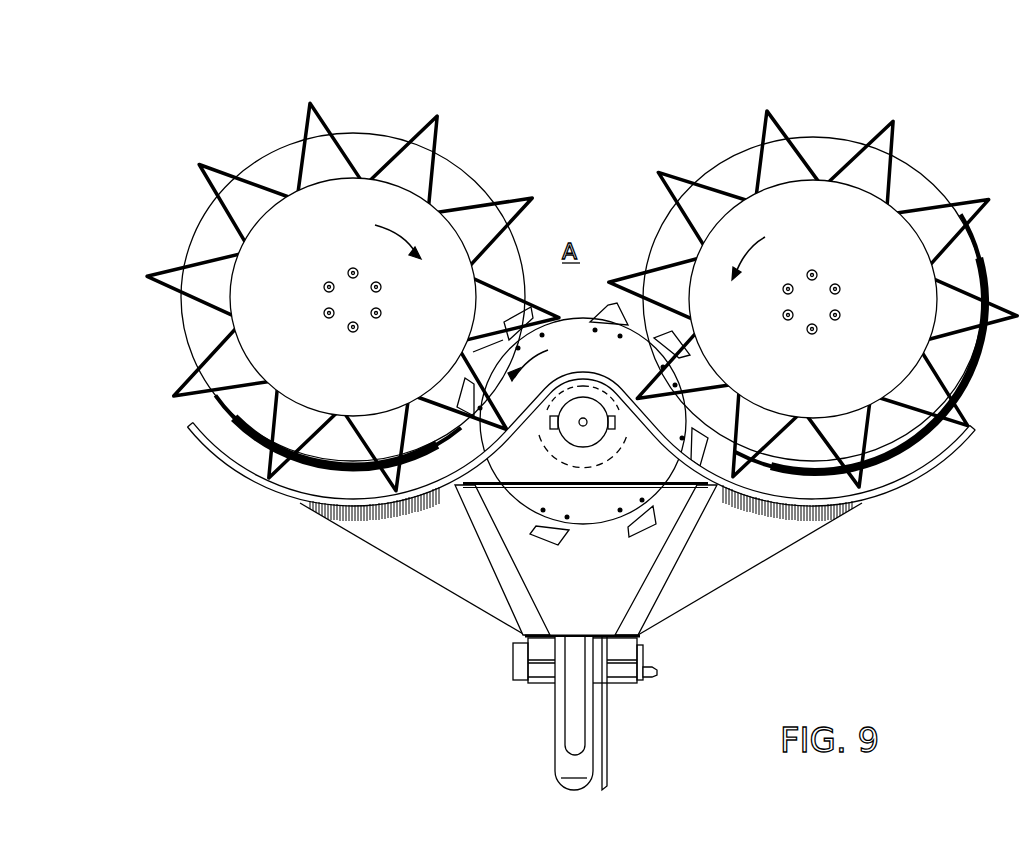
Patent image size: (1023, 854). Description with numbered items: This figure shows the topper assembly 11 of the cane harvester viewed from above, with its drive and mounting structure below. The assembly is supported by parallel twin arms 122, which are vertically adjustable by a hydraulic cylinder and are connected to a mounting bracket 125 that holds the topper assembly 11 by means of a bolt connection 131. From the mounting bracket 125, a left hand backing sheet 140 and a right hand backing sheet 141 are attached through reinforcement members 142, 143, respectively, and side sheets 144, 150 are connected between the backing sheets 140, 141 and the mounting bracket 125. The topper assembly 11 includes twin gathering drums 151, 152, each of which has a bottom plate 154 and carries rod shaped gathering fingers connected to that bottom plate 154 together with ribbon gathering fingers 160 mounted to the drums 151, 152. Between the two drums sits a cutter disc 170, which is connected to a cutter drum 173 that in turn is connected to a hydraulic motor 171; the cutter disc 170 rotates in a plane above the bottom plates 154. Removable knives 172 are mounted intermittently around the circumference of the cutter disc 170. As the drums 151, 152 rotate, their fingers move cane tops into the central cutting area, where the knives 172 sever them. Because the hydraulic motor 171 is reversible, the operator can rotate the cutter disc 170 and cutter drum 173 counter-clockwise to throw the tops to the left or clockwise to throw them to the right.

The topper assembly 11 is at (567, 434).
The twin arms 122 is at (585, 728).
The mounting bracket 125 is at (640, 655).
The bolt connection 131 is at (658, 672).
The left hand backing sheet 140 is at (237, 467).
The right hand backing sheet 141 is at (923, 477).
The reinforcement member 142 is at (472, 535).
The reinforcement member 143 is at (695, 528).
The side sheet 144 is at (360, 538).
The side sheet 150 is at (782, 536).
The gathering drum 151 is at (345, 244).
The gathering drum 152 is at (832, 246).
The bottom plate 154 is at (363, 133).
The ribbon gathering fingers 160 is at (504, 198).
The cutter disc 170 is at (598, 363).
The hydraulic motor 171 is at (600, 440).
The removable knives 172 is at (598, 315).
The cutter drum 173 is at (550, 457).